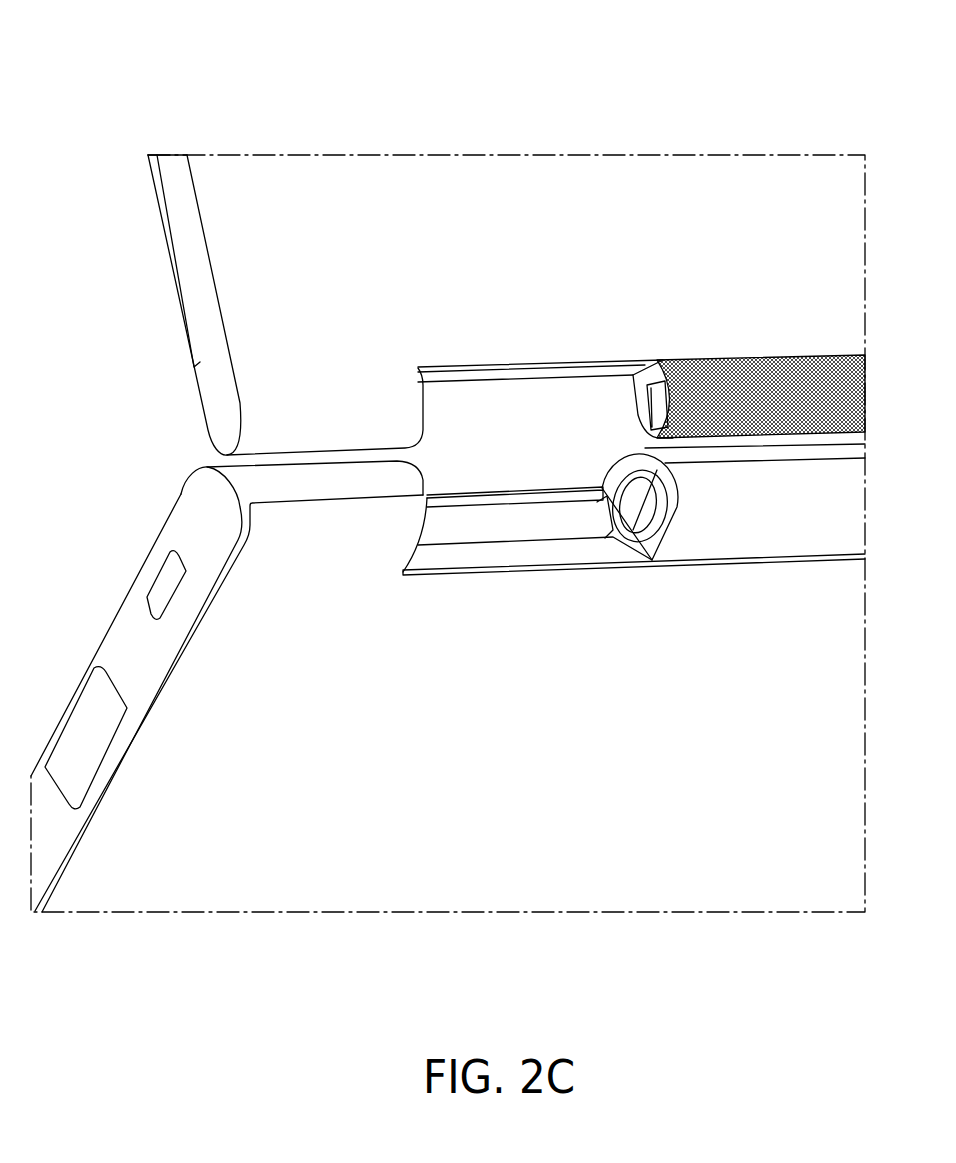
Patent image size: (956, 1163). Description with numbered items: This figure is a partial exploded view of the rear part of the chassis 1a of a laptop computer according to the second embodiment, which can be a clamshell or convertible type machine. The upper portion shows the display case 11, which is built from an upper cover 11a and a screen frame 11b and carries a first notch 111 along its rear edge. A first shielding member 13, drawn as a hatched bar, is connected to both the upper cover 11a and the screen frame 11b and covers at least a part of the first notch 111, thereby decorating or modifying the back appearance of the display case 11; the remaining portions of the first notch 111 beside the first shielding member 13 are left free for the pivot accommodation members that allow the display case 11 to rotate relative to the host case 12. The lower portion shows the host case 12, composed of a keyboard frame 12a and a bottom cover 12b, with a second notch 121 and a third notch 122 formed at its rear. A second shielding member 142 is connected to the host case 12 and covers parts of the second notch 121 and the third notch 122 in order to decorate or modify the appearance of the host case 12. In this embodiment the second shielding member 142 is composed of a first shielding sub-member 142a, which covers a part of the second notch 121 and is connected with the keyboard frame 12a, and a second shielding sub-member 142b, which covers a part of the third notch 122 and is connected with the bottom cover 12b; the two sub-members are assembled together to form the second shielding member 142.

The chassis 1a is at (147, 70).
The display case 11 is at (83, 250).
The upper cover 11a is at (233, 303).
The screen frame 11b is at (173, 263).
The first notch 111 is at (552, 396).
The host case 12 is at (85, 460).
The keyboard frame 12a is at (181, 493).
The bottom cover 12b is at (203, 675).
The second notch 121 is at (488, 515).
The third notch 122 is at (568, 548).
The first shielding member 13 is at (745, 388).
The second shielding member 142 is at (817, 627).
The first shielding sub-member 142a is at (715, 453).
The second shielding sub-member 142b is at (780, 527).